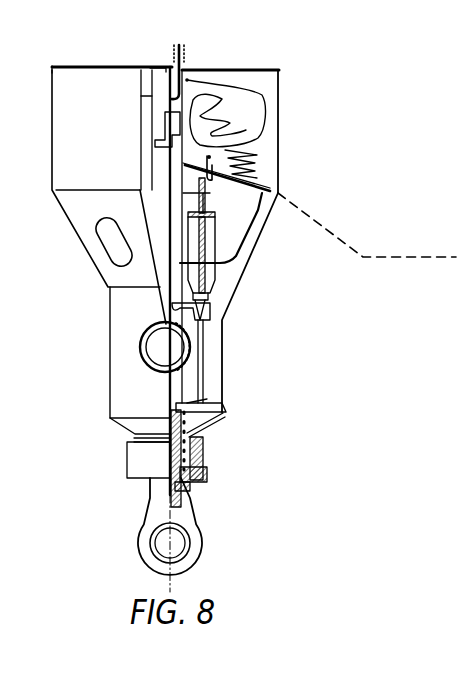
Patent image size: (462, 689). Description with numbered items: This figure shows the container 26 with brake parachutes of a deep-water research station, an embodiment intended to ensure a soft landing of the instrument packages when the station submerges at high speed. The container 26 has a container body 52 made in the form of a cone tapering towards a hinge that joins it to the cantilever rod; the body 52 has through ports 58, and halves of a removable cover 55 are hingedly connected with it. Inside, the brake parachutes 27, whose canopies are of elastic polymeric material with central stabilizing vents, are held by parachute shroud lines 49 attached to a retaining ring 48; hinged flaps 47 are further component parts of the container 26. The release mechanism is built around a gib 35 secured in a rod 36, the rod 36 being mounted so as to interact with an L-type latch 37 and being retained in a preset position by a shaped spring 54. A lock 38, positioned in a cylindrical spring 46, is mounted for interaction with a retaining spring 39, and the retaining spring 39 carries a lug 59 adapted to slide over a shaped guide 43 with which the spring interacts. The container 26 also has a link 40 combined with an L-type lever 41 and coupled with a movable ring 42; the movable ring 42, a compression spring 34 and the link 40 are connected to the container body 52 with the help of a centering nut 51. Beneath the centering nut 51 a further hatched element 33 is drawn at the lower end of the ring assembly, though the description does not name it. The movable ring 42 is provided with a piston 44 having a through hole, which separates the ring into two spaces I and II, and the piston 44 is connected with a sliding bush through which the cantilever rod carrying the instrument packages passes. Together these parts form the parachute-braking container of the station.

The container 26 is at (84, 270).
The brake parachutes 27 is at (262, 98).
The bottom plate 33 is at (190, 490).
The compression spring 34 is at (204, 440).
The gib 35 is at (270, 190).
The rod 36 is at (212, 222).
The L-type latch 37 is at (207, 285).
The lock 38 is at (176, 50).
The retaining spring 39 is at (166, 97).
The link 40 is at (224, 406).
The L-type lever 41 is at (208, 318).
The movable ring 42 is at (196, 550).
The shaped guide 43 is at (172, 129).
The piston 44 is at (146, 446).
The cylindrical spring 46 is at (185, 58).
The hinged flaps 47 is at (356, 248).
The retaining ring 48 is at (212, 160).
The parachute shroud lines 49 is at (262, 158).
The centering nut 51 is at (206, 463).
The container body 52 is at (117, 288).
The shaped spring 54 is at (226, 263).
The removable cover 55 is at (93, 66).
The through ports 58 is at (106, 233).
The lug 59 is at (176, 128).
The space I is at (152, 468).
The space II is at (170, 428).